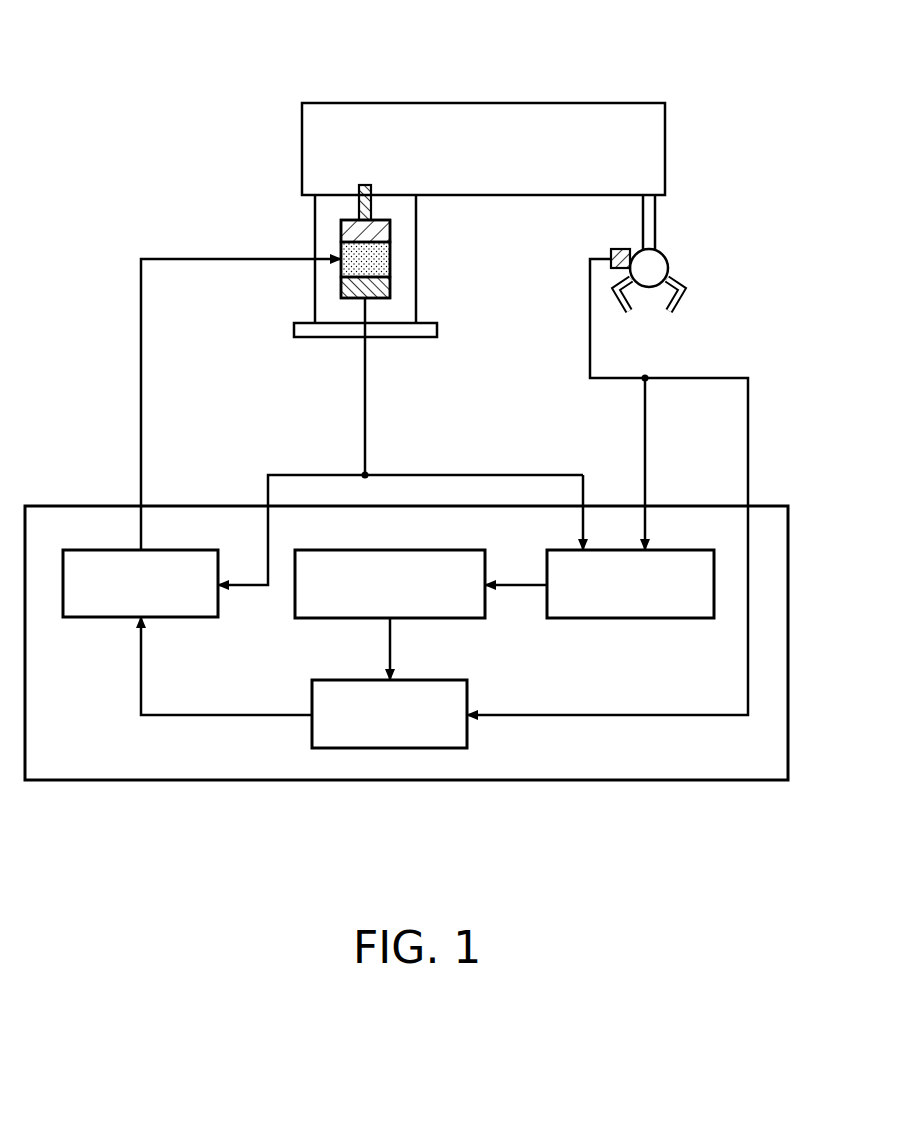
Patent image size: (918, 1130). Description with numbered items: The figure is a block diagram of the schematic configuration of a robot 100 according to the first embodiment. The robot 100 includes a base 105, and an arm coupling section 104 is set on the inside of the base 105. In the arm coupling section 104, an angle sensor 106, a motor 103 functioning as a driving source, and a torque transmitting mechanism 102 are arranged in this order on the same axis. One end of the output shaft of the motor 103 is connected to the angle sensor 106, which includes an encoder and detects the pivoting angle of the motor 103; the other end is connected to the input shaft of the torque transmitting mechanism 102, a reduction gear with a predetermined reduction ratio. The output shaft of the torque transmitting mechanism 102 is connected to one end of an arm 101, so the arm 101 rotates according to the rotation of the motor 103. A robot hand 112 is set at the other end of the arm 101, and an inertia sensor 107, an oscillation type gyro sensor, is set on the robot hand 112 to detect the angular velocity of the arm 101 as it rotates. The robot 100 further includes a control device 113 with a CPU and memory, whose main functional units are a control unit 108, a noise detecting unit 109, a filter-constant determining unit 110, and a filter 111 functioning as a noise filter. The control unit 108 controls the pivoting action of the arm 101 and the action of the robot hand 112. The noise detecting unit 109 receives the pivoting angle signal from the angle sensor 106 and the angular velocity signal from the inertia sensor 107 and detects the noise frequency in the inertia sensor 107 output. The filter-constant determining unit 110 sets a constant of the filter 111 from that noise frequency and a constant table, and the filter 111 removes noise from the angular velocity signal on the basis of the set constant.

The robot 100 is at (186, 86).
The arm 101 is at (367, 113).
The torque transmitting mechanism 102 is at (380, 232).
The motor 103 is at (380, 261).
The arm coupling section 104 is at (482, 215).
The base 105 is at (323, 212).
The angle sensor 106 is at (380, 289).
The inertia sensor 107 is at (626, 247).
The control unit 108 is at (188, 548).
The noise detecting unit 109 is at (670, 548).
The filter-constant determining unit 110 is at (423, 548).
The filter 111 is at (405, 678).
The robot hand 112 is at (657, 257).
The control device 113 is at (760, 505).